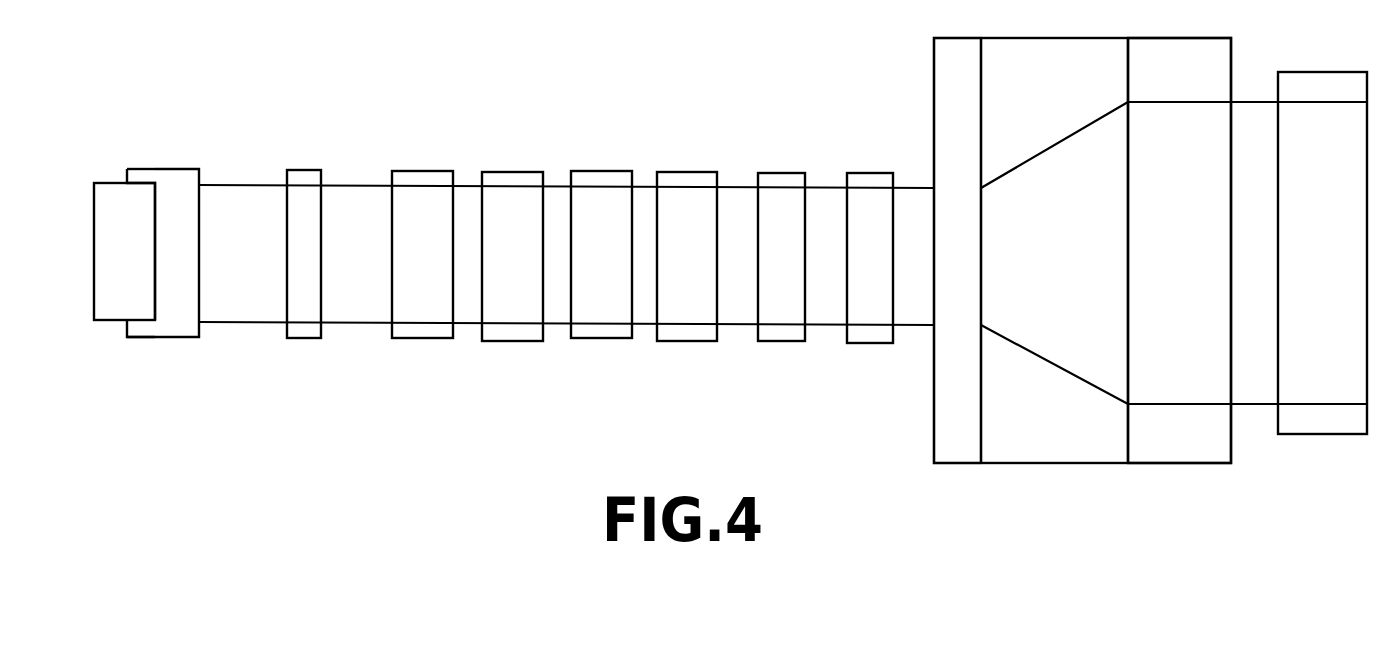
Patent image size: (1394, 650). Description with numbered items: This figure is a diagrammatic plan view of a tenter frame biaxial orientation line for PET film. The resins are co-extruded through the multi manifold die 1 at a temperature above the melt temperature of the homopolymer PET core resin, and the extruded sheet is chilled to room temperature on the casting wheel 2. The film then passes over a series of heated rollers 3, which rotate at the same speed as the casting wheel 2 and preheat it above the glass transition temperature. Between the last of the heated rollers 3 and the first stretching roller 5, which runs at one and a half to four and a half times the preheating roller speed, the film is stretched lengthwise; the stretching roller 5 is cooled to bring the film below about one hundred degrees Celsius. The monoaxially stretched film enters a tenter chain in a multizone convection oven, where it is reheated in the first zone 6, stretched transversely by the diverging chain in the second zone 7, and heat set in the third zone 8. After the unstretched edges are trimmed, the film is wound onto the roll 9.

The multi manifold die 1 is at (135, 267).
The casting wheel 2 is at (165, 267).
The heated rollers 3 is at (703, 126).
The stretching roller 5 is at (892, 138).
The first zone 6 is at (944, 277).
The second zone 7 is at (1031, 278).
The third zone 8 is at (1173, 279).
The roll 9 is at (1332, 279).